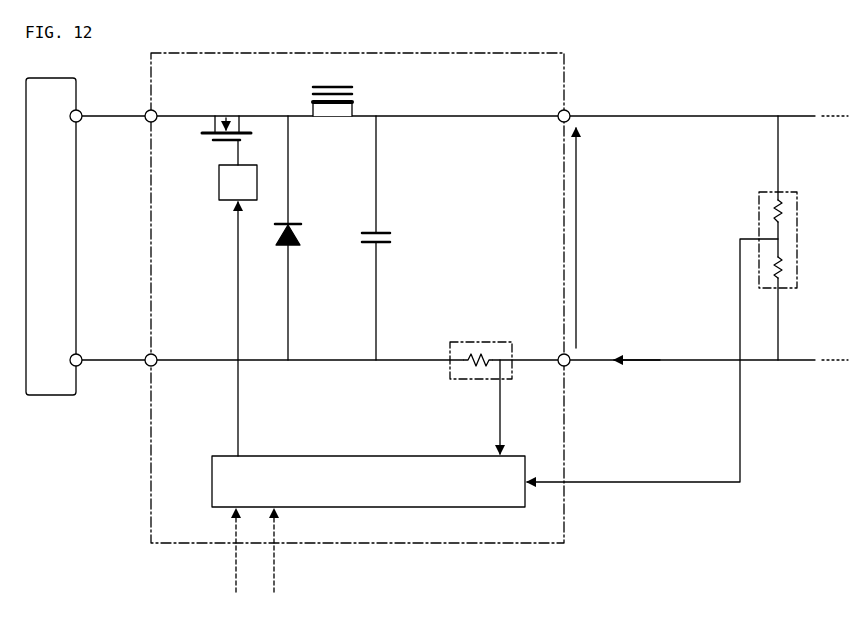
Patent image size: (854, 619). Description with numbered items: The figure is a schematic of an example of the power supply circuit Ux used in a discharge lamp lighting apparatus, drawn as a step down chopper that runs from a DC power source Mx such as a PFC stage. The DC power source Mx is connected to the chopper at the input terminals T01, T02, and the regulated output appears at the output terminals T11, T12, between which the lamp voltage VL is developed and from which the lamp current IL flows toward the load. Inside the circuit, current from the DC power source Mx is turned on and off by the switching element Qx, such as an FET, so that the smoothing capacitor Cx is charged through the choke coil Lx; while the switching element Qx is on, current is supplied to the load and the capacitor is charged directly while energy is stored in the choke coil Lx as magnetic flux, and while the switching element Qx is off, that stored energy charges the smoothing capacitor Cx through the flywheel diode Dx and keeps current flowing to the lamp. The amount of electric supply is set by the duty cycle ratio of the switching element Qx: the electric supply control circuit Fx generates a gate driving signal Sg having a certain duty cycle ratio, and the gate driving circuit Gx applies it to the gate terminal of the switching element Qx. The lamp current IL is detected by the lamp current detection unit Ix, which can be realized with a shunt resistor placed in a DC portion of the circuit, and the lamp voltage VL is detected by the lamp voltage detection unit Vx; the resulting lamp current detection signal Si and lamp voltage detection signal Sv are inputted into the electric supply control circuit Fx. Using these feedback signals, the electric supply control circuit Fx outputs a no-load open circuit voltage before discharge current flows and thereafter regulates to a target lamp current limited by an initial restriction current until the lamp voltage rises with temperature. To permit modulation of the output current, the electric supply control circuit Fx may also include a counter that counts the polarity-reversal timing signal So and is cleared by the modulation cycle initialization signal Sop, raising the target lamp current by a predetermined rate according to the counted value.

The DC power source Mx is at (51, 236).
The input terminal T01 is at (146, 111).
The input terminal T02 is at (146, 365).
The output terminal T11 is at (570, 111).
The output terminal T12 is at (570, 365).
The switching element Qx is at (204, 138).
The gate driving circuit Gx is at (218, 202).
The choke coil Lx is at (332, 105).
The smoothing capacitor Cx is at (362, 232).
The flywheel diode Dx is at (294, 246).
The lamp current detection unit Ix is at (494, 340).
The lamp current detection signal Si is at (498, 406).
The gate driving signal Sg is at (236, 406).
The lamp voltage detection signal Sv is at (738, 418).
The lamp voltage detection unit Vx is at (798, 218).
The electric supply control circuit Fx is at (368, 481).
The power supply circuit Ux is at (566, 520).
The polarity-reversal timing signal So is at (233, 573).
The modulation cycle initialization signal Sop is at (277, 573).
The lamp voltage VL is at (591, 238).
The lamp current IL is at (637, 346).